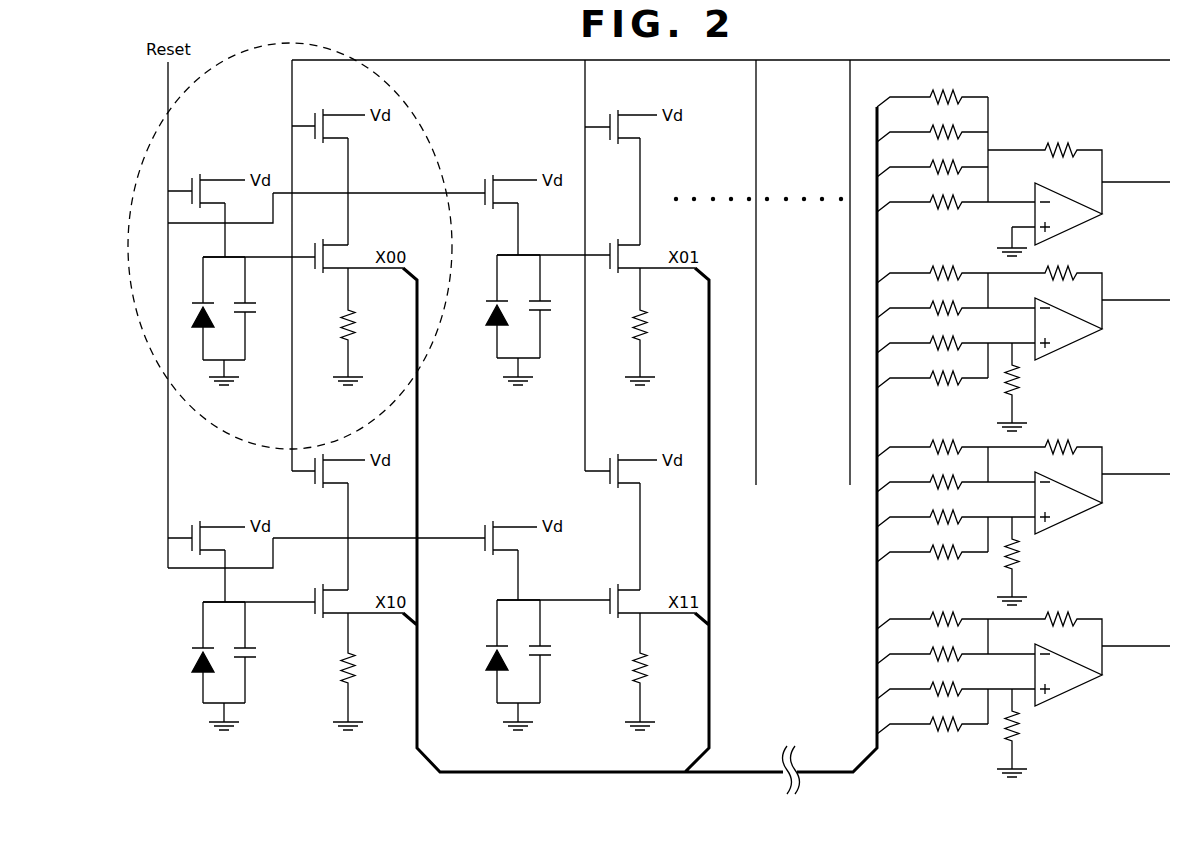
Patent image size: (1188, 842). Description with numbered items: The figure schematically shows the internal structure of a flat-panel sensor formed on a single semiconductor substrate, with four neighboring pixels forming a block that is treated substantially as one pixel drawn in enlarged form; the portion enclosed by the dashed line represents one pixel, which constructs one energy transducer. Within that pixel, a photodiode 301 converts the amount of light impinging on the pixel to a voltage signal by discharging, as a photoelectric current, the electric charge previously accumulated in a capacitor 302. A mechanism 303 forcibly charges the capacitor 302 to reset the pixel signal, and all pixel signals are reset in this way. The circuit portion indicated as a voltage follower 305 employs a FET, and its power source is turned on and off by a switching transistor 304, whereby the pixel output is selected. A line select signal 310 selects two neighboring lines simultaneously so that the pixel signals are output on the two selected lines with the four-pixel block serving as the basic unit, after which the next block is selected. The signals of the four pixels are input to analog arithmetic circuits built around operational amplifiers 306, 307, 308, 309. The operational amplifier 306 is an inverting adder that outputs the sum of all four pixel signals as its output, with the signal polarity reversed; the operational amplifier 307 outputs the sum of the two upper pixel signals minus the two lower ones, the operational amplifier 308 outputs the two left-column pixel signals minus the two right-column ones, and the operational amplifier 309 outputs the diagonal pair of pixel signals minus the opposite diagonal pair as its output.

The photodiode 301 is at (200, 322).
The capacitor 302 is at (257, 318).
The mechanism 303 is at (192, 177).
The switching transistor 304 is at (315, 113).
The voltage follower 305 is at (333, 257).
The operational amplifier 306 is at (1060, 233).
The operational amplifier 307 is at (1060, 348).
The operational amplifier 308 is at (1023, 516).
The operational amplifier 309 is at (1023, 688).
The line select signal 310 is at (731, 48).